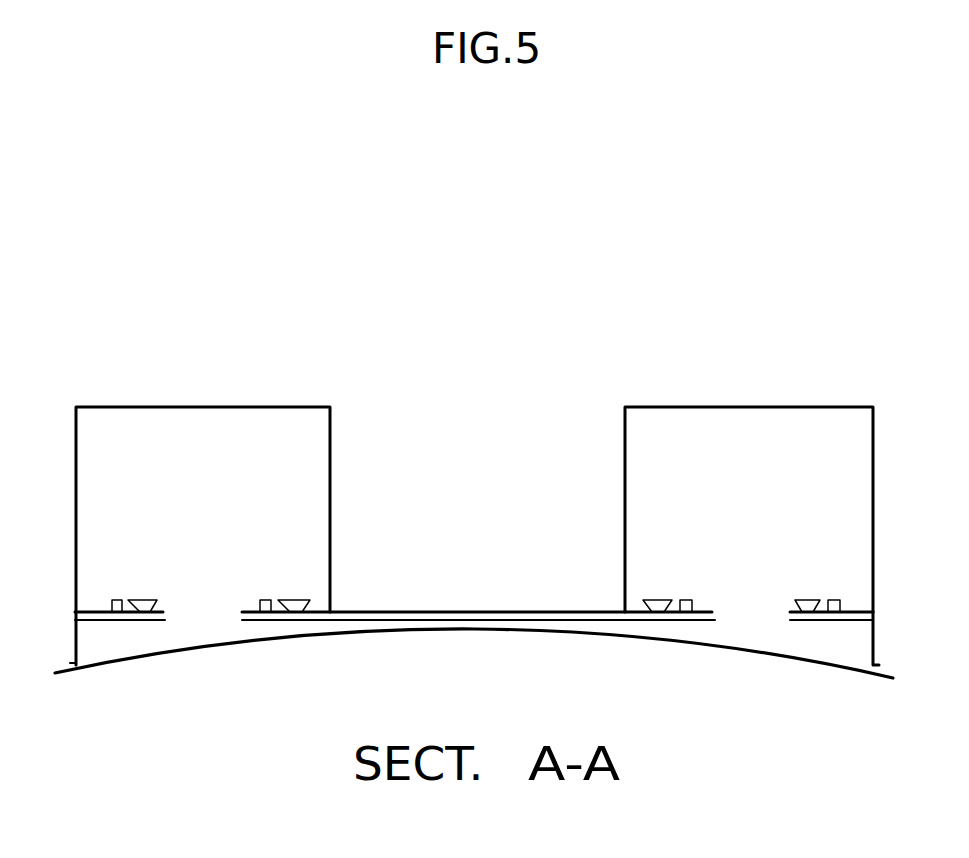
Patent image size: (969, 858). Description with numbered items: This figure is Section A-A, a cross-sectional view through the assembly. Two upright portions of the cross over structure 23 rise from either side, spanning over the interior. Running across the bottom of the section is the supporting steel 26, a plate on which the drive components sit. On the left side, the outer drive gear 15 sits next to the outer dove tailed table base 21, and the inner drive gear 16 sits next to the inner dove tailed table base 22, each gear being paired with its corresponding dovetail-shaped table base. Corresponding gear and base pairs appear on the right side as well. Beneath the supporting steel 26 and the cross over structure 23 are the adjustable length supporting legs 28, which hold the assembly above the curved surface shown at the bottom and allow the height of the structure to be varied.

The outer drive gear 15 is at (115, 598).
The inner drive gear 16 is at (263, 598).
The outer dove tailed table base 21 is at (142, 603).
The inner dove tailed table base 22 is at (297, 603).
The cross over structure 23 is at (622, 407).
The supporting steel 26 is at (373, 612).
The adjustable length supporting legs 28 is at (872, 650).